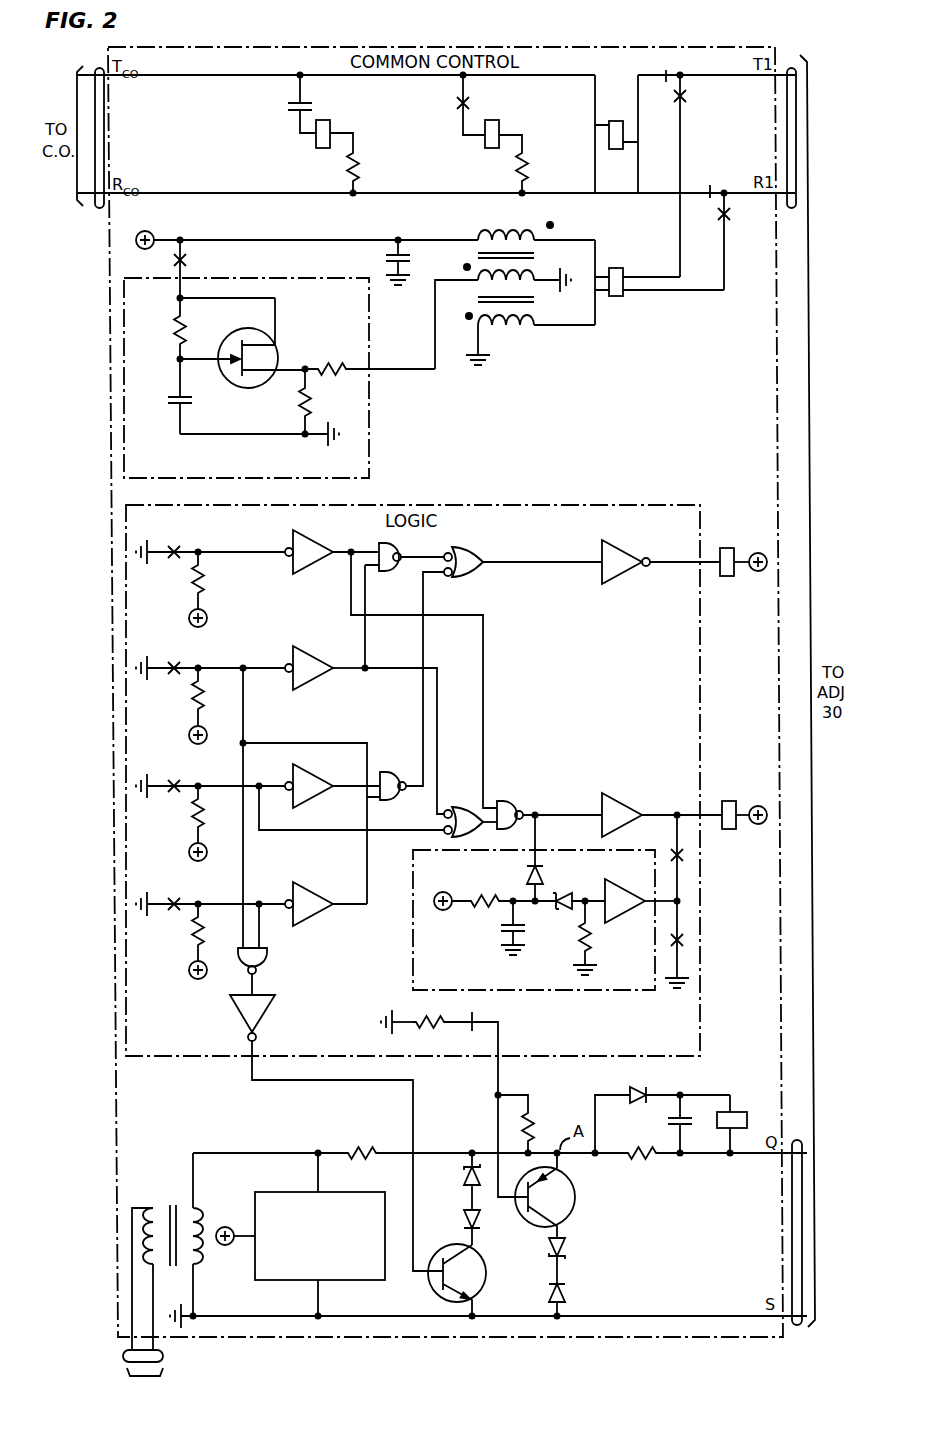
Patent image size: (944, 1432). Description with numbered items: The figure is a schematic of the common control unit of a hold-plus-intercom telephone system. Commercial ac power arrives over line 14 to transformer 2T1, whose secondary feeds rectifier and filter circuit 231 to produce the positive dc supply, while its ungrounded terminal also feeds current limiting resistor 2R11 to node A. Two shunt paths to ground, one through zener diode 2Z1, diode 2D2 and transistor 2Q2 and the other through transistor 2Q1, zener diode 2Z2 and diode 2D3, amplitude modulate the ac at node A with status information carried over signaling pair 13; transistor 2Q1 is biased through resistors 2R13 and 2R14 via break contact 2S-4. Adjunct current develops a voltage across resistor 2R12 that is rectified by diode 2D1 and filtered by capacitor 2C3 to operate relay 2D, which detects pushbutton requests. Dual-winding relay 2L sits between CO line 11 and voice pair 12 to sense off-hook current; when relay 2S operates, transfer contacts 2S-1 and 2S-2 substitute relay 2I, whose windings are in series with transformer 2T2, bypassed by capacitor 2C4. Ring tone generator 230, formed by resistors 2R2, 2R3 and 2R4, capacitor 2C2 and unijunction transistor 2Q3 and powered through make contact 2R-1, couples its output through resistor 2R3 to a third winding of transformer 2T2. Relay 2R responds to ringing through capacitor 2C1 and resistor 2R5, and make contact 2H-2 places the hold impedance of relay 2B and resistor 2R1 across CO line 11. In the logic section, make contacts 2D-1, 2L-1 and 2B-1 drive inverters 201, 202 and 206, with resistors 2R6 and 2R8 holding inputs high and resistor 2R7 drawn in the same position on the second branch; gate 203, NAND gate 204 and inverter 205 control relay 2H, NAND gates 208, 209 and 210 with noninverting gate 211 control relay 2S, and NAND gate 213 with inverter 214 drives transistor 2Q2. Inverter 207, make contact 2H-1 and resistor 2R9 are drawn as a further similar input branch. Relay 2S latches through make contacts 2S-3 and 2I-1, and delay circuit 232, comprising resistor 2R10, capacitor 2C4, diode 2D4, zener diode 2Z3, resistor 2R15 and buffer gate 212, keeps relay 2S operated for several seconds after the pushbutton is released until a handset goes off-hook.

The CO line 11 is at (99, 208).
The voice pair 12 is at (792, 208).
The signaling pair 13 is at (796, 1140).
The line 14 is at (165, 1356).
The capacitor 2C1 is at (286, 106).
The relay 2R is at (334, 117).
The resistor 2R5 is at (364, 162).
The make contact 2H-2 is at (457, 104).
The relay 2B is at (500, 118).
The resistor 2R1 is at (529, 162).
The relay 2L is at (616, 134).
The transfer contact 2S-1 is at (672, 91).
The transfer contact 2S-2 is at (714, 205).
The relay 2I is at (659, 282).
The transformer 2T2 is at (515, 287).
The capacitor 2C4 is at (382, 262).
The make contact 2R-1 is at (188, 261).
The ring tone generator 230 is at (372, 400).
The resistor 2R2 is at (177, 320).
The unijunction transistor 2Q3 is at (246, 336).
The output resistor 2R3 is at (332, 360).
The capacitor 2C2 is at (168, 399).
The resistor 2R4 is at (294, 408).
The make contact 2D-1 is at (172, 544).
The resistor 2R6 is at (208, 572).
The inverter gate 201 is at (295, 528).
The gate 203 is at (388, 574).
The NAND gate 204 is at (475, 555).
The inverter gate 205 is at (628, 555).
The relay 2H is at (741, 550).
The make contact 2L-1 is at (173, 662).
The resistor 2R7 is at (190, 708).
The inverter 202 is at (297, 640).
The make contact 2B-1 is at (173, 782).
The resistor 2R8 is at (190, 826).
The inverter 206 is at (297, 766).
The three-input NAND gate 208 is at (390, 772).
The NAND gate 209 is at (467, 807).
The NAND gate 210 is at (512, 808).
The noninverting gate 211 is at (620, 794).
The relay 2S is at (742, 803).
The make contact 2S-3 is at (672, 853).
The make contact 2I-1 is at (684, 940).
The delay circuit 232 is at (413, 941).
The resistor 2R10 is at (477, 888).
The diode 2D4 is at (524, 877).
The zener diode 2Z3 is at (562, 890).
The resistor 2R15 is at (590, 940).
The buffer gate 212 is at (630, 890).
The relay contact 2H-1 is at (173, 900).
The resistor 2R9 is at (190, 944).
The inverter 207 is at (298, 882).
The two-input NAND gate 213 is at (267, 957).
The inverter gate 214 is at (272, 1003).
The break contact 2S-4 is at (476, 1015).
The resistor 2R13 is at (431, 1031).
The current limiting resistor 2R11 is at (352, 1148).
The rectifier and filter circuit 231 is at (363, 1192).
The transformer 2T1 is at (167, 1251).
The zener diode 2Z1 is at (462, 1177).
The diode 2D2 is at (465, 1217).
The transistor 2Q2 is at (486, 1268).
The transistor 2Q1 is at (575, 1192).
The zener diode 2Z2 is at (568, 1245).
The diode 2D3 is at (568, 1290).
The bias resistor 2R14 is at (538, 1118).
The diode 2D1 is at (638, 1083).
The capacitor 2C3 is at (668, 1122).
The resistor 2R12 is at (649, 1158).
The relay 2D is at (748, 1118).